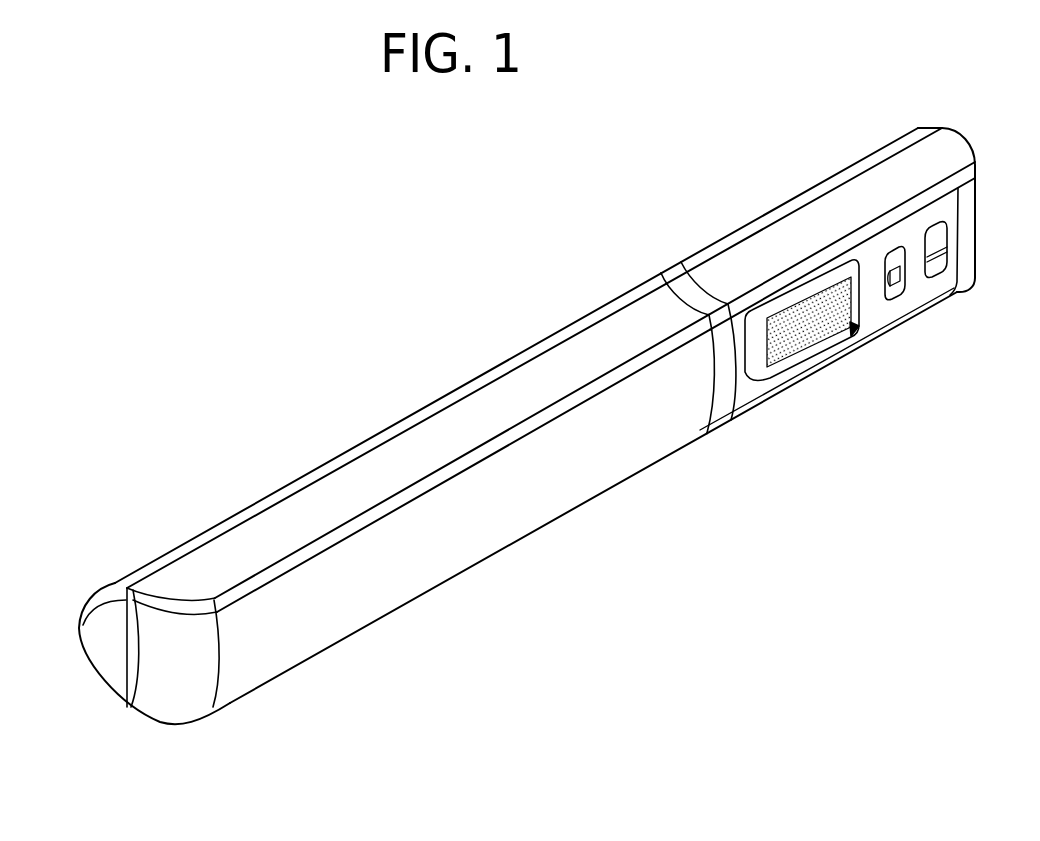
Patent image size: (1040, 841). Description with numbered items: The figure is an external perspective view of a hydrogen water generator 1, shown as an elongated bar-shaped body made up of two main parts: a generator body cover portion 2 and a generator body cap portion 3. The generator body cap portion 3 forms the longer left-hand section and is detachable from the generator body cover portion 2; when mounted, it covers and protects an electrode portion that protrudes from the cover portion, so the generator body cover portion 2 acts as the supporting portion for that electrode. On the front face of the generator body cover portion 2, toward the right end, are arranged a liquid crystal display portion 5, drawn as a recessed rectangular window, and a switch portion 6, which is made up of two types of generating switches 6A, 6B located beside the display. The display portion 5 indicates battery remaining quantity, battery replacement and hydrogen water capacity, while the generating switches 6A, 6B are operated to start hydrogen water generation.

The hydrogen water generator 1 is at (347, 288).
The generator body cover portion 2 is at (815, 222).
The generator body cap portion 3 is at (297, 510).
The liquid crystal display portion 5 is at (783, 350).
The switch portion 6 is at (1017, 345).
The generating switch 6A is at (893, 298).
The generating switch 6B is at (940, 277).